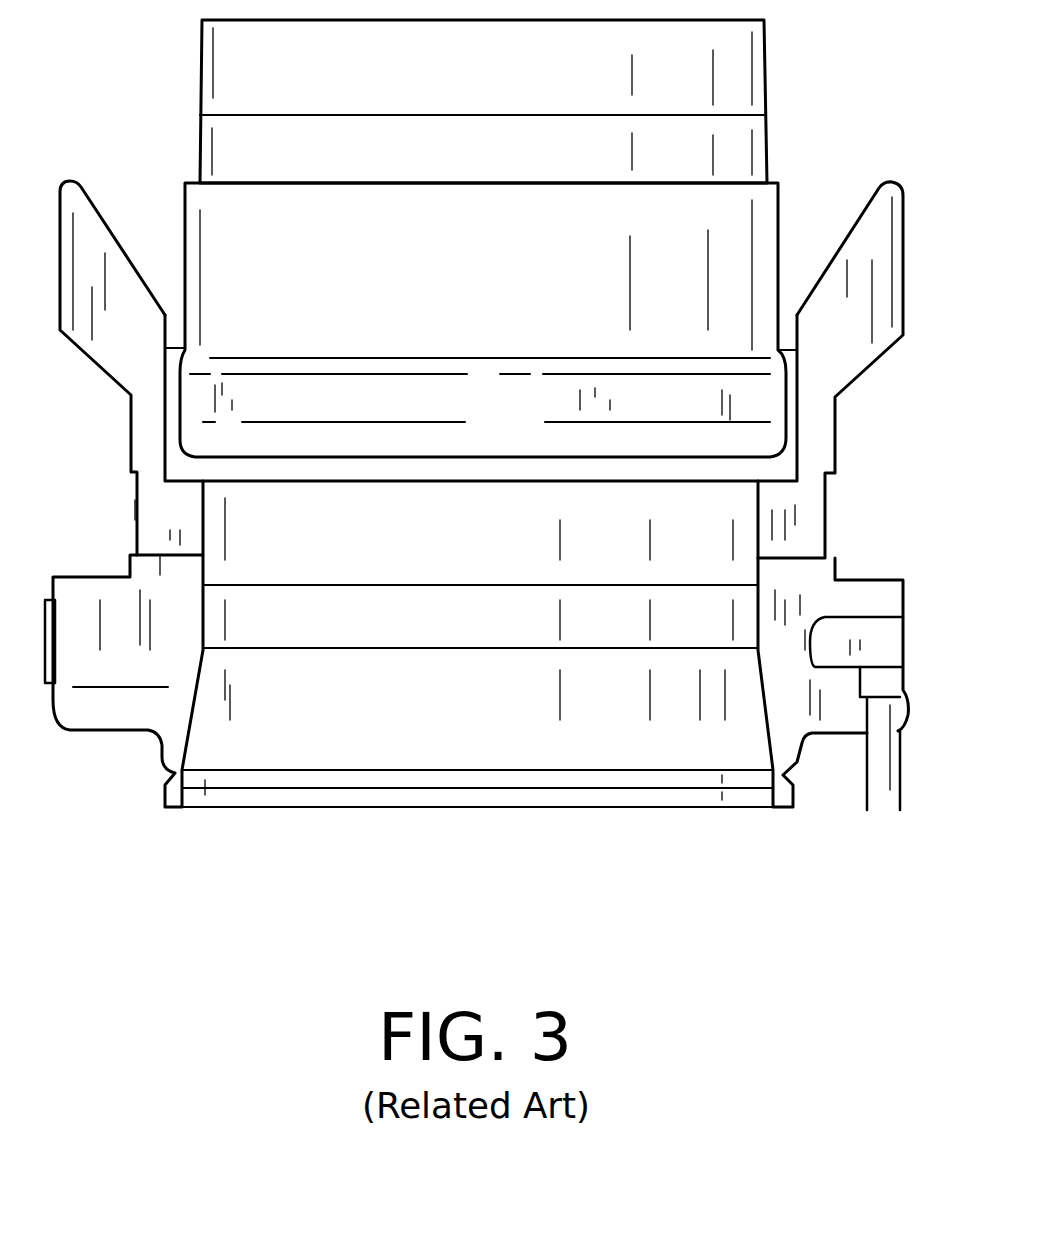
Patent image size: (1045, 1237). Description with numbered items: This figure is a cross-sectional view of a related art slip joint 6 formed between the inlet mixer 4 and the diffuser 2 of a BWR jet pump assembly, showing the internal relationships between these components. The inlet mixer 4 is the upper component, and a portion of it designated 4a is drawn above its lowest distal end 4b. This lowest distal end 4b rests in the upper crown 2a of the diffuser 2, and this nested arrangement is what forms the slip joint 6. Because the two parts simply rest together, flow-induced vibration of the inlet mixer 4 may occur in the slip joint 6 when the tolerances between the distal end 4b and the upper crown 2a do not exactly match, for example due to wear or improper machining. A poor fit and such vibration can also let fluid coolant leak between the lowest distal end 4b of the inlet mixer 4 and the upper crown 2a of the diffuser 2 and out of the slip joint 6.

The diffuser 2 is at (683, 714).
The upper crown 2a is at (836, 463).
The inlet mixer 4 is at (767, 62).
The slide plate 4a is at (781, 222).
The lowest distal end 4b is at (190, 443).
The slip joint 6 is at (797, 420).